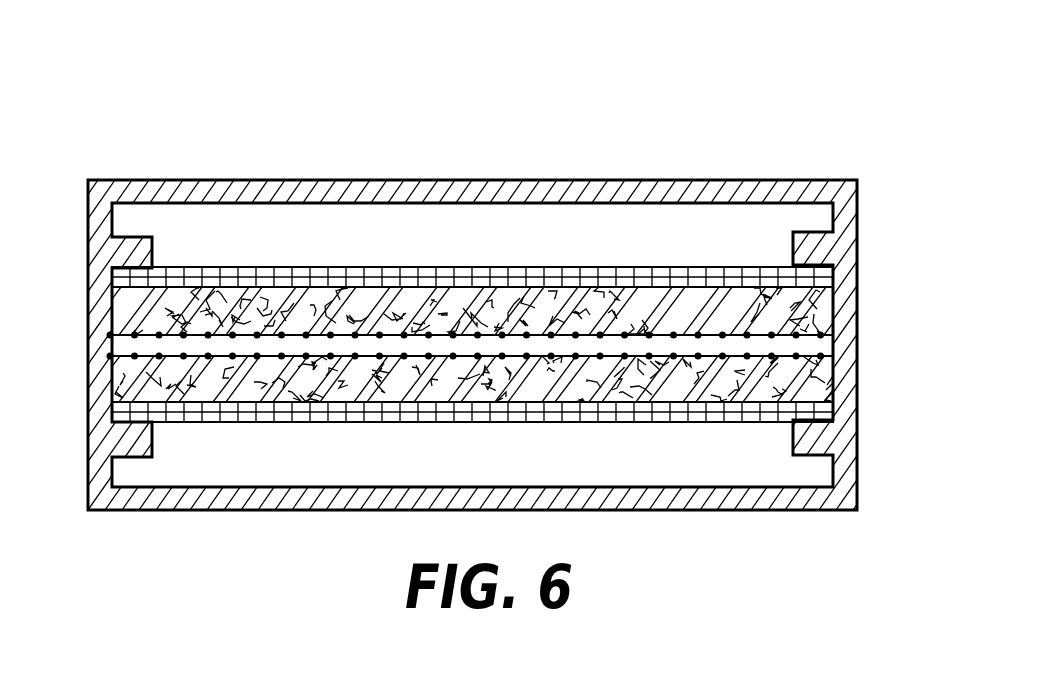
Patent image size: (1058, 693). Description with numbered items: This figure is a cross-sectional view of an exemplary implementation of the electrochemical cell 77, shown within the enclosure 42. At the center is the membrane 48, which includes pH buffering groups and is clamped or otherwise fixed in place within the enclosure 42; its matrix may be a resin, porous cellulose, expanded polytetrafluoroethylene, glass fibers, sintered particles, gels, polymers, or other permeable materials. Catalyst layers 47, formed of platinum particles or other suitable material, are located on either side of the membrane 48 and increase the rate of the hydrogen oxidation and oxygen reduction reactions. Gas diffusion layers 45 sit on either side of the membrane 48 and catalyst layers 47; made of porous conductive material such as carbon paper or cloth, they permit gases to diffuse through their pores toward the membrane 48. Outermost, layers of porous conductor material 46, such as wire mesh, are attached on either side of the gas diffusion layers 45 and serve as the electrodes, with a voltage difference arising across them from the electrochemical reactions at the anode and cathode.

The enclosure 42 is at (222, 190).
The gas diffusion layers 45 is at (817, 313).
The porous conductor layers 46 is at (117, 282).
The catalyst layers 47 is at (345, 330).
The membrane 48 is at (222, 345).
The cell 77 is at (529, 268).